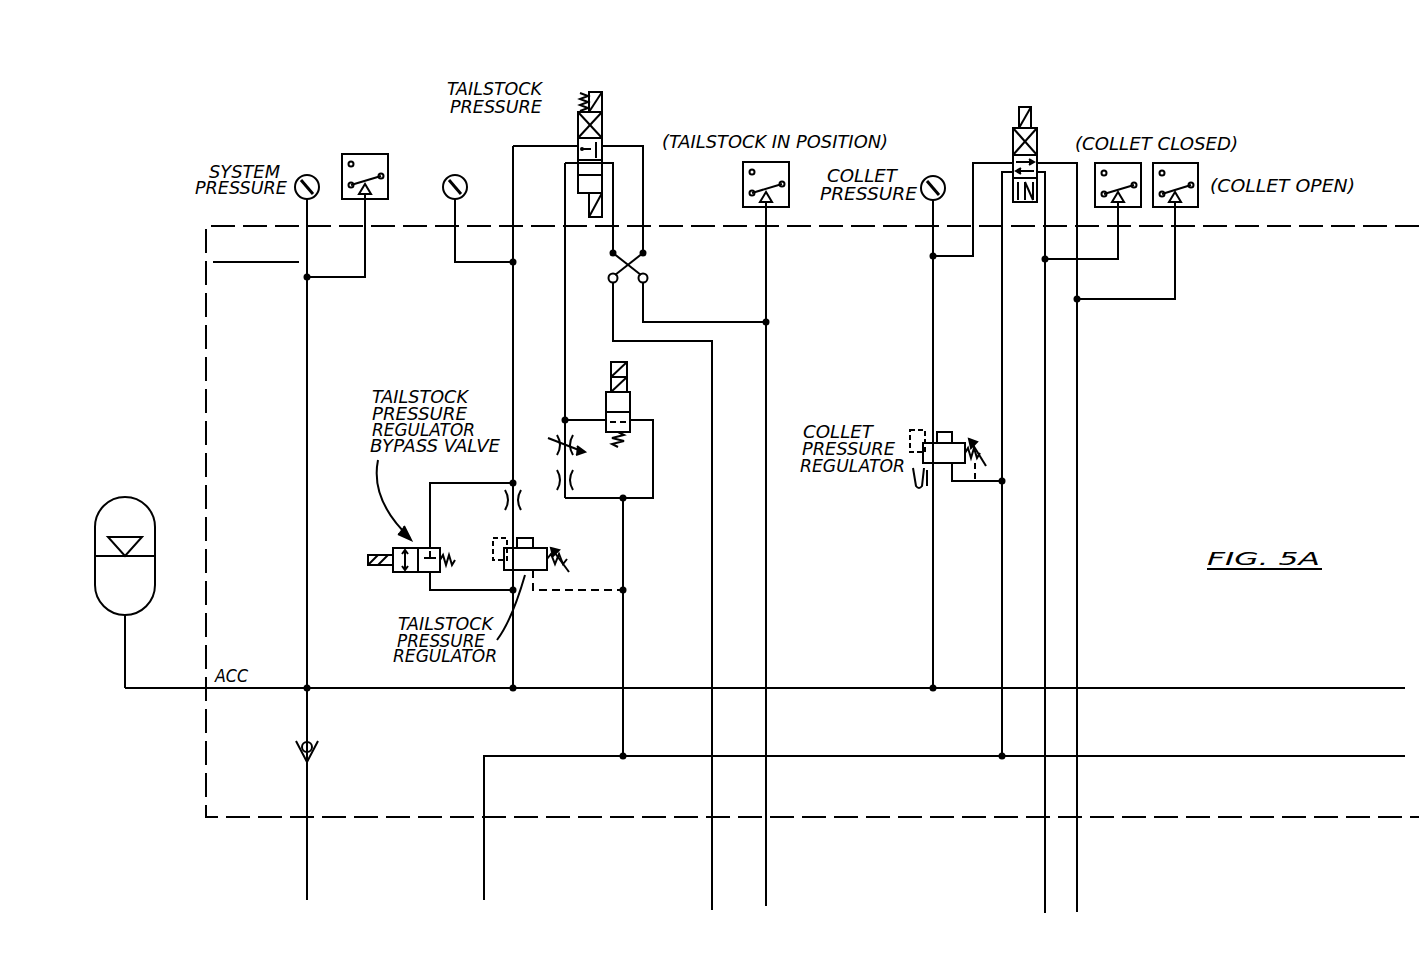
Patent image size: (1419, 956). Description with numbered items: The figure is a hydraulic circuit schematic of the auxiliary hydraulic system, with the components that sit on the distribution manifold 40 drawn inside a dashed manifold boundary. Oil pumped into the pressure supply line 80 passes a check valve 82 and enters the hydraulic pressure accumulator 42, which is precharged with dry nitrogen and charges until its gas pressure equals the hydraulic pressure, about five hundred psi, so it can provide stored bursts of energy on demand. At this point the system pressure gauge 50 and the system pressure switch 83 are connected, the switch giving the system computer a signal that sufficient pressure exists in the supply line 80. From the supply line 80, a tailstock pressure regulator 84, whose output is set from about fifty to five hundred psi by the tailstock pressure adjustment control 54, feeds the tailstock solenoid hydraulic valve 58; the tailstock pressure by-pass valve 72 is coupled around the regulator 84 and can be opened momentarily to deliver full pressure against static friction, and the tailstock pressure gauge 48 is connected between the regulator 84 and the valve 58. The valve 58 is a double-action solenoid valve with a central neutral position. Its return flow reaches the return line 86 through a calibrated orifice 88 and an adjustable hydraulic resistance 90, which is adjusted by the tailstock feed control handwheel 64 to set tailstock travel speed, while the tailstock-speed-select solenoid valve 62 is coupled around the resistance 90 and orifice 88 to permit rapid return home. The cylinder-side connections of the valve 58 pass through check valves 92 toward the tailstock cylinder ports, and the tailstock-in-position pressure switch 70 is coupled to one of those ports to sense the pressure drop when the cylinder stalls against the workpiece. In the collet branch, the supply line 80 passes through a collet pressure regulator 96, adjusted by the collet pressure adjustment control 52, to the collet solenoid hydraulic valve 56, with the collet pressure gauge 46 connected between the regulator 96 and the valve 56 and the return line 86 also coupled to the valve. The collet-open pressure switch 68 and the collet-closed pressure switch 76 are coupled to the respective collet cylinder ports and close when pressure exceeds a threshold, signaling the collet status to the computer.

The distribution manifold 40 is at (206, 385).
The hydraulic pressure accumulator 42 is at (121, 497).
The collet pressure gauge 46 is at (940, 177).
The tailstock pressure gauge 48 is at (455, 173).
The system pressure gauge 50 is at (312, 174).
The collet pressure adjustment control 52 is at (981, 490).
The tailstock pressure adjustment control 54 is at (566, 563).
The collet solenoid hydraulic valve 56 is at (1040, 130).
The tailstock solenoid hydraulic valve 58 is at (604, 103).
The tailstock-speed-select solenoid valve 62 is at (632, 406).
The tailstock feed control handwheel 64 is at (578, 443).
The collet-open pressure switch 68 is at (1185, 210).
The tailstock-in-position pressure switch 70 is at (743, 182).
The tailstock pressure by-pass valve 72 is at (420, 574).
The collet-closed pressure switch 76 is at (1130, 210).
The pressure supply line 80 is at (307, 800).
The check valve 82 is at (315, 752).
The system pressure switch 83 is at (370, 152).
The tailstock pressure regulator 84 is at (525, 576).
The return line 86 is at (627, 648).
The calibrated orifice 88 is at (567, 500).
The adjustable hydraulic resistance 90 is at (560, 433).
The check valves 92 is at (650, 283).
The collet pressure regulator 96 is at (917, 428).